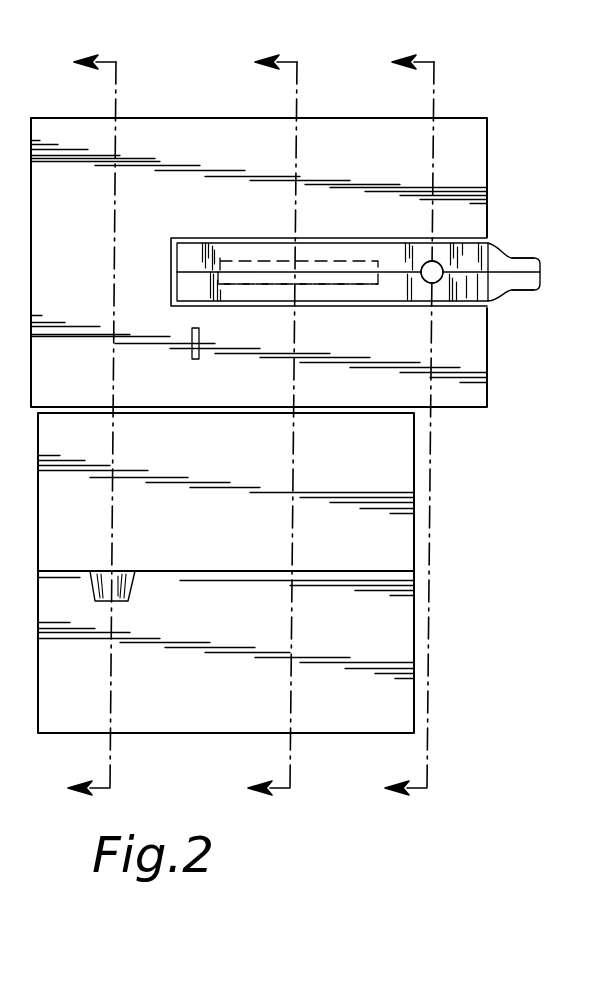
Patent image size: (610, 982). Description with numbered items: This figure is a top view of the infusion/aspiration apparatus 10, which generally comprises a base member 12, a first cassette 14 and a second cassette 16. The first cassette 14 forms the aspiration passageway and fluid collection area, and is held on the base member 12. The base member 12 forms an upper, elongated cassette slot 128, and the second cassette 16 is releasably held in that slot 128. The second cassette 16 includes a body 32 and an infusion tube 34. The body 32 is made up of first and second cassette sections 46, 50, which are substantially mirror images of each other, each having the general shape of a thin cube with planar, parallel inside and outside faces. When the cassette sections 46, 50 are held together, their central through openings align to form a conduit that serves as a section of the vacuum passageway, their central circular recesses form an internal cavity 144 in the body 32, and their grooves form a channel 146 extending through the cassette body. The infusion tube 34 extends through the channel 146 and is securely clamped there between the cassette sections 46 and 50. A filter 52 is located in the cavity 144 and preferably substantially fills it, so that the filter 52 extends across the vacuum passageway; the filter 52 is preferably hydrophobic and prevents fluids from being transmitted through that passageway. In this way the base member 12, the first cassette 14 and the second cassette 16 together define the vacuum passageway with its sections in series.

The infusion/aspiration apparatus 10 is at (468, 62).
The base member 12 is at (480, 158).
The first cassette 14 is at (444, 512).
The second cassette 16 is at (509, 248).
The body 32 is at (504, 301).
The infusion tube 34 is at (439, 281).
The first cassette section 46 is at (224, 252).
The second cassette section 50 is at (275, 300).
The filter 52 is at (312, 254).
The cassette slot 128 is at (258, 240).
The internal cavity 144 is at (322, 290).
The channel 146 is at (432, 261).